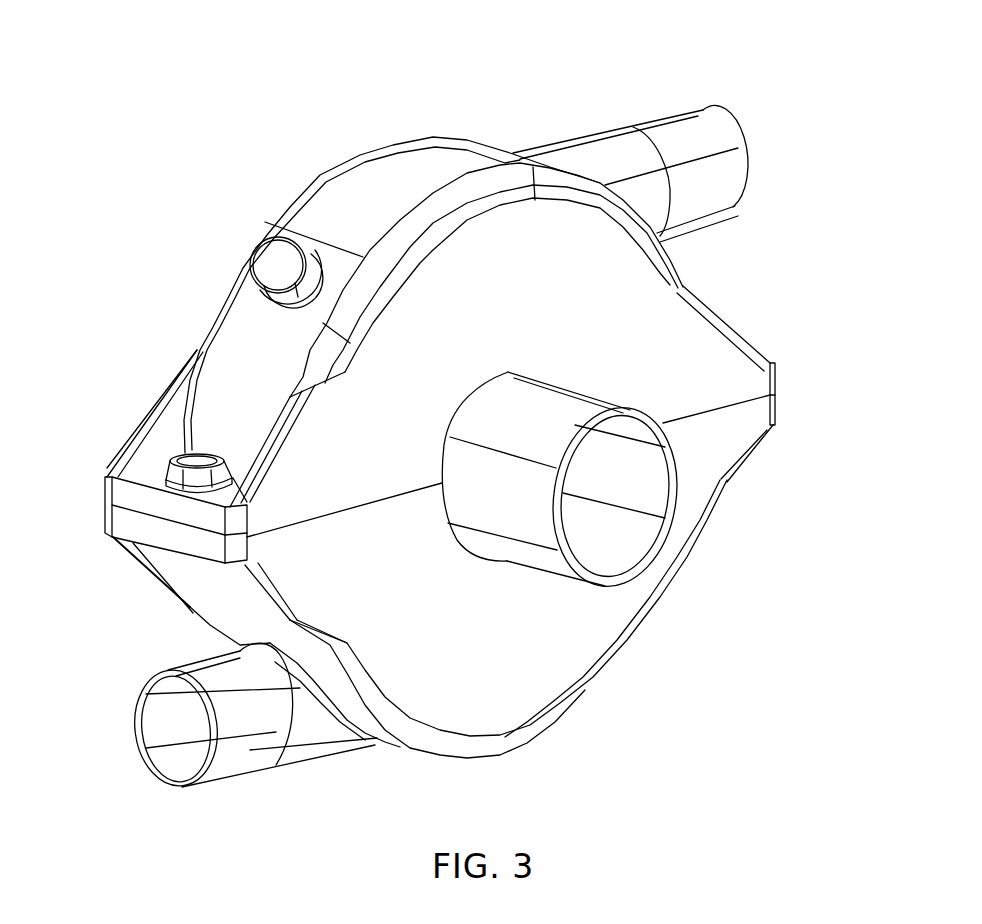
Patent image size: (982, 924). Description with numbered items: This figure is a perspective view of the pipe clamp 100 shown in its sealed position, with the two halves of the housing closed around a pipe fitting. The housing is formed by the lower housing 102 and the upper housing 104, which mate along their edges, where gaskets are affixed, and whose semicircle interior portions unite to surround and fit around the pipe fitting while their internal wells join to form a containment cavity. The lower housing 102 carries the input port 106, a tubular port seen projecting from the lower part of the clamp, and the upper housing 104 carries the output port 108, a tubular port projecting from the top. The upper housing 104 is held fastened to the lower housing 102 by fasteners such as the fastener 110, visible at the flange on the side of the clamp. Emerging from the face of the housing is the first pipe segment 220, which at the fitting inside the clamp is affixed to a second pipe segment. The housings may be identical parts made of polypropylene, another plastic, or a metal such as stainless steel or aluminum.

The pipe clamp 100 is at (158, 200).
The lower housing 102 is at (498, 657).
The upper housing 104 is at (400, 167).
The input port 106 is at (243, 733).
The output port 108 is at (667, 138).
The fastener 110 is at (186, 455).
The first pipe segment 220 is at (593, 530).